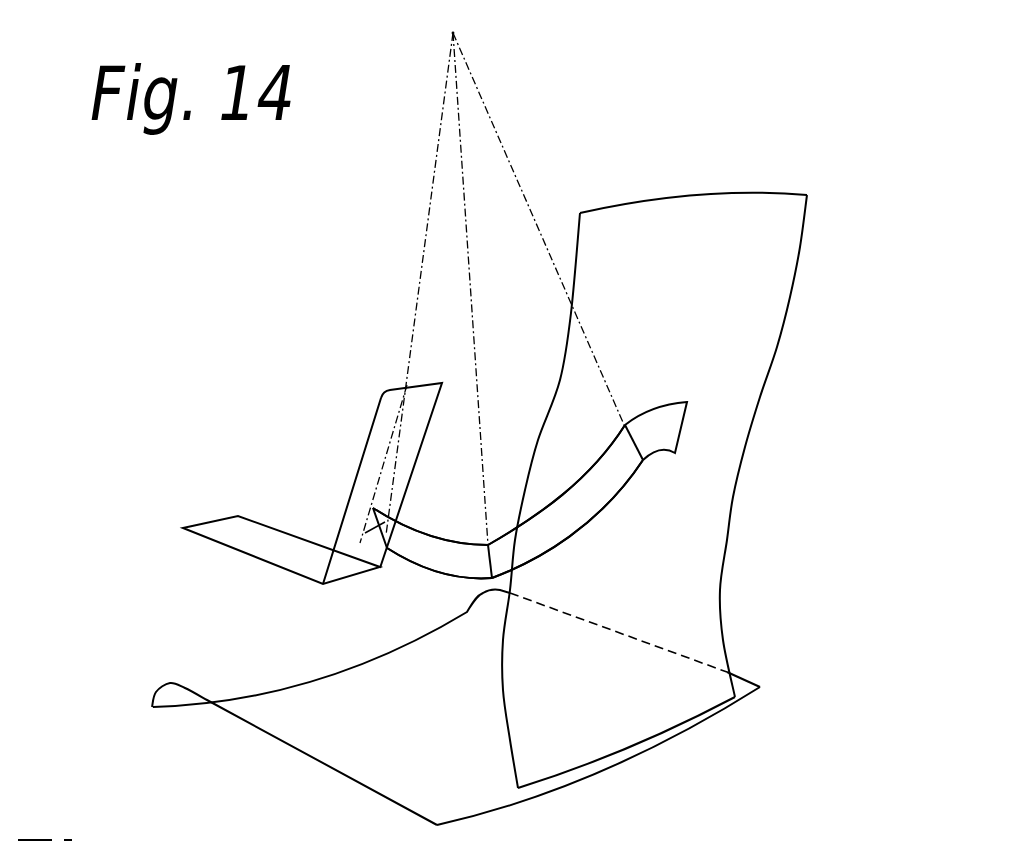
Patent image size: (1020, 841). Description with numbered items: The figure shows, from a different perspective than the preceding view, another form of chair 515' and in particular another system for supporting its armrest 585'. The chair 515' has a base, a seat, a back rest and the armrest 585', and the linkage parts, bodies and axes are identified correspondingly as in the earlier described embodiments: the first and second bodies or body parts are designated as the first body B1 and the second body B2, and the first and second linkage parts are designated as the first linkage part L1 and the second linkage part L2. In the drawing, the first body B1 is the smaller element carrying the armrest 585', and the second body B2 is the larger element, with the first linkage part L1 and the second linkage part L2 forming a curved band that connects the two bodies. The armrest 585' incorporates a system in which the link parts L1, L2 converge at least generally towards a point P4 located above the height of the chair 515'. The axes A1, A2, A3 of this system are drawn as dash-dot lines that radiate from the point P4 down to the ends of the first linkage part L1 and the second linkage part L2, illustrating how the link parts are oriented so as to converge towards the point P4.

The chair 515' is at (654, 435).
The armrest 585' is at (456, 604).
The point P4 is at (452, 21).
The axis A1 is at (406, 288).
The axis A2 is at (474, 289).
The axis A3 is at (539, 230).
The first body B1 is at (372, 512).
The second body B2 is at (587, 490).
The first linkage part L1 is at (432, 543).
The second linkage part L2 is at (565, 501).